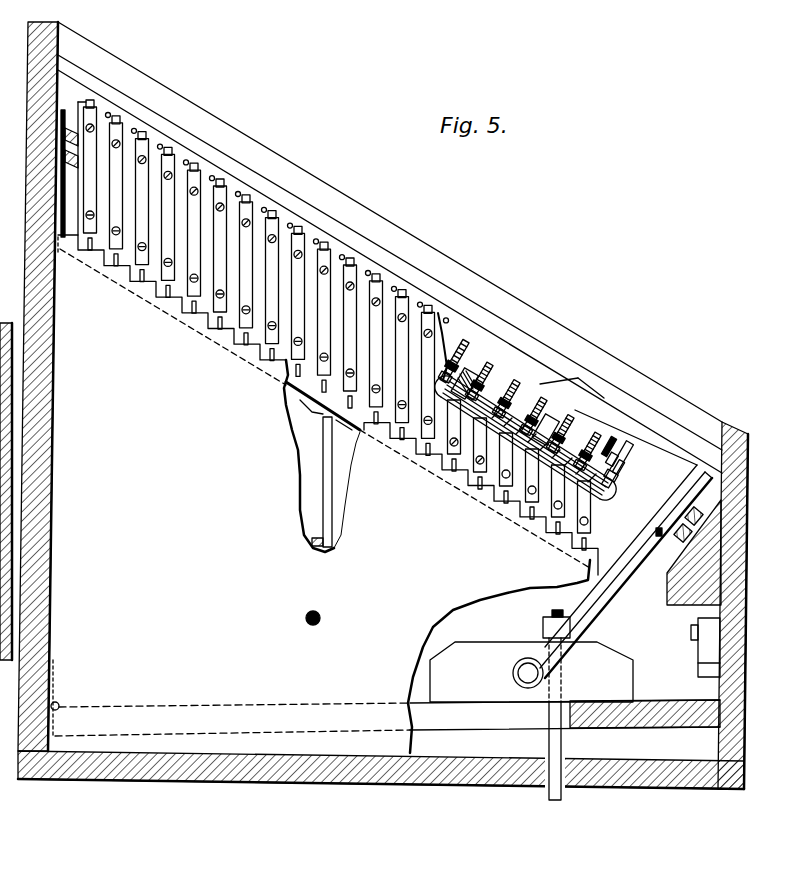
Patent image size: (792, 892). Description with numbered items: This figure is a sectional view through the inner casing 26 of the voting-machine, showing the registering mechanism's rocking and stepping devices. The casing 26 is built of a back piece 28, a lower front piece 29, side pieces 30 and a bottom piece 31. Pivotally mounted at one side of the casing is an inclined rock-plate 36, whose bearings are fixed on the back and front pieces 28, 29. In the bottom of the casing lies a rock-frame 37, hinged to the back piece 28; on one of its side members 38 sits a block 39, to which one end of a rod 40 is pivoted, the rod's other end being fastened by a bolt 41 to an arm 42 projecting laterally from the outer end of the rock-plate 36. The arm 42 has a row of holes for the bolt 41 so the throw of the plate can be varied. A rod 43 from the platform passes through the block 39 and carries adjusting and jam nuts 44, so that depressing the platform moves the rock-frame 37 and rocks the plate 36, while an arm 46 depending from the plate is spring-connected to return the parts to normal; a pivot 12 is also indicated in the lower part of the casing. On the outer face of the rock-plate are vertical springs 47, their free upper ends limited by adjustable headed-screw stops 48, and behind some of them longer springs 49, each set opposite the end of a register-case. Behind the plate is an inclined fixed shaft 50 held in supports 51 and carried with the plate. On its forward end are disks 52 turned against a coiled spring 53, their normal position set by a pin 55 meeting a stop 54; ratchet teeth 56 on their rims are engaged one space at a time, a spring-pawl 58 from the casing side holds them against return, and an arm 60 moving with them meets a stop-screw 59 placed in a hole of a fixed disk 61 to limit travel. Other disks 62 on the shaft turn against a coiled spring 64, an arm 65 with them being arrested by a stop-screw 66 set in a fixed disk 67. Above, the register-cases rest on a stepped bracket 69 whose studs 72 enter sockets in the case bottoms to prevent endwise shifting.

The pivot pin 12 is at (326, 621).
The casing 26 is at (205, 698).
The back piece 28 is at (33, 122).
The front piece 29 is at (740, 573).
The side pieces 30 is at (390, 247).
The bottom piece 31 is at (381, 780).
The rock-plate 36 is at (621, 528).
The rock-frame 37 is at (645, 725).
The side member 38 is at (565, 715).
The block 39 is at (520, 656).
The rod 40 is at (594, 620).
The bolt 41 is at (658, 532).
The arm 42 is at (690, 536).
The rod 43 is at (565, 746).
The adjusting and jam nuts 44 is at (540, 623).
The arm 46 is at (333, 498).
The springs 47 is at (436, 306).
The stops 48 is at (186, 160).
The springs 49 is at (410, 290).
The fixed shaft 50 is at (498, 388).
The supports 51 is at (618, 430).
The disks 52 is at (546, 393).
The coiled spring 53 is at (546, 418).
The stop 54 is at (529, 476).
The pin 55 is at (571, 430).
The ratchet-shaped teeth 56 is at (610, 420).
The spring-pawl 58 is at (612, 420).
The stop-screw 59 is at (624, 440).
The arm 60 is at (583, 507).
The disk 61 is at (602, 468).
The disks 62 is at (467, 340).
The coiled spring 64 is at (525, 421).
The arm 65 is at (480, 444).
The stop-screw 66 is at (548, 388).
The fixed disk 67 is at (537, 384).
The stepped bracket 69 is at (295, 454).
The studs 72 is at (118, 265).